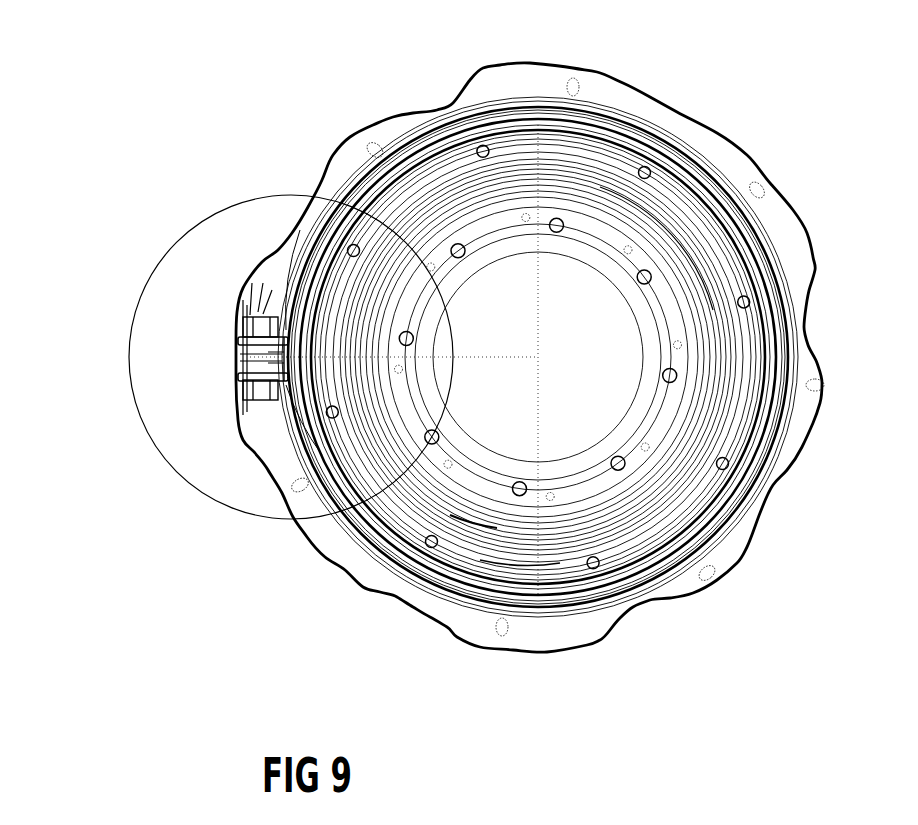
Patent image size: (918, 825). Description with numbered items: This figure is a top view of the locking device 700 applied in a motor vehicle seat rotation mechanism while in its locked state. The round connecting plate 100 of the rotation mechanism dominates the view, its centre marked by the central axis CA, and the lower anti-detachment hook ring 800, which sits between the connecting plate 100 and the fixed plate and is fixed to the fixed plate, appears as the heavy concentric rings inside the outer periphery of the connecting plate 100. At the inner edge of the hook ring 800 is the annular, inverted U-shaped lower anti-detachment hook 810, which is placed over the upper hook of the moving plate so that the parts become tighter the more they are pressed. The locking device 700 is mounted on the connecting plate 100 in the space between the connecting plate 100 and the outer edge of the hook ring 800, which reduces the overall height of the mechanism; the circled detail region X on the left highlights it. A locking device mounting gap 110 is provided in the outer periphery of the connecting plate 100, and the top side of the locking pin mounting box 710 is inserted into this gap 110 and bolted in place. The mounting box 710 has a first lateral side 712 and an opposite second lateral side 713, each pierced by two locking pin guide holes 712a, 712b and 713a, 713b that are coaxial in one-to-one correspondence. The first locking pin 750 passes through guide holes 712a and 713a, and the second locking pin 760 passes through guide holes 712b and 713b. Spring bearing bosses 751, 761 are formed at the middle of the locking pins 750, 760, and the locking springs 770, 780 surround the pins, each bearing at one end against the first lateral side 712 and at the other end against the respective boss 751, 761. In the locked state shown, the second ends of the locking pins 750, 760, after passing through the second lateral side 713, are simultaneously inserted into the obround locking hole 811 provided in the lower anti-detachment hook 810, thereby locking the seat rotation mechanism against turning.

The connecting plate 100 is at (800, 333).
The lower anti-detachment hook ring 800 is at (697, 163).
The lower anti-detachment hook 810 is at (697, 163).
The spring bearing boss 751 is at (300, 348).
The central axis CA is at (538, 357).
The detail region X is at (147, 290).
The locking device 700 is at (249, 335).
The locking device mounting gap 110 is at (242, 387).
The locking pin 750 is at (240, 342).
The locking pin 760 is at (240, 375).
The first lateral side 712 is at (238, 325).
The locking pin guide hole 712a is at (235, 328).
The locking pin guide hole 712b is at (240, 362).
The spring bearing boss 761 is at (270, 398).
The obround locking hole 811 is at (240, 357).
The locking spring 770 is at (255, 316).
The locking spring 780 is at (267, 393).
The locking pin mounting box 710 is at (275, 318).
The second lateral side 713 is at (303, 343).
The locking pin guide hole 713a is at (300, 352).
The locking pin guide hole 713b is at (324, 435).